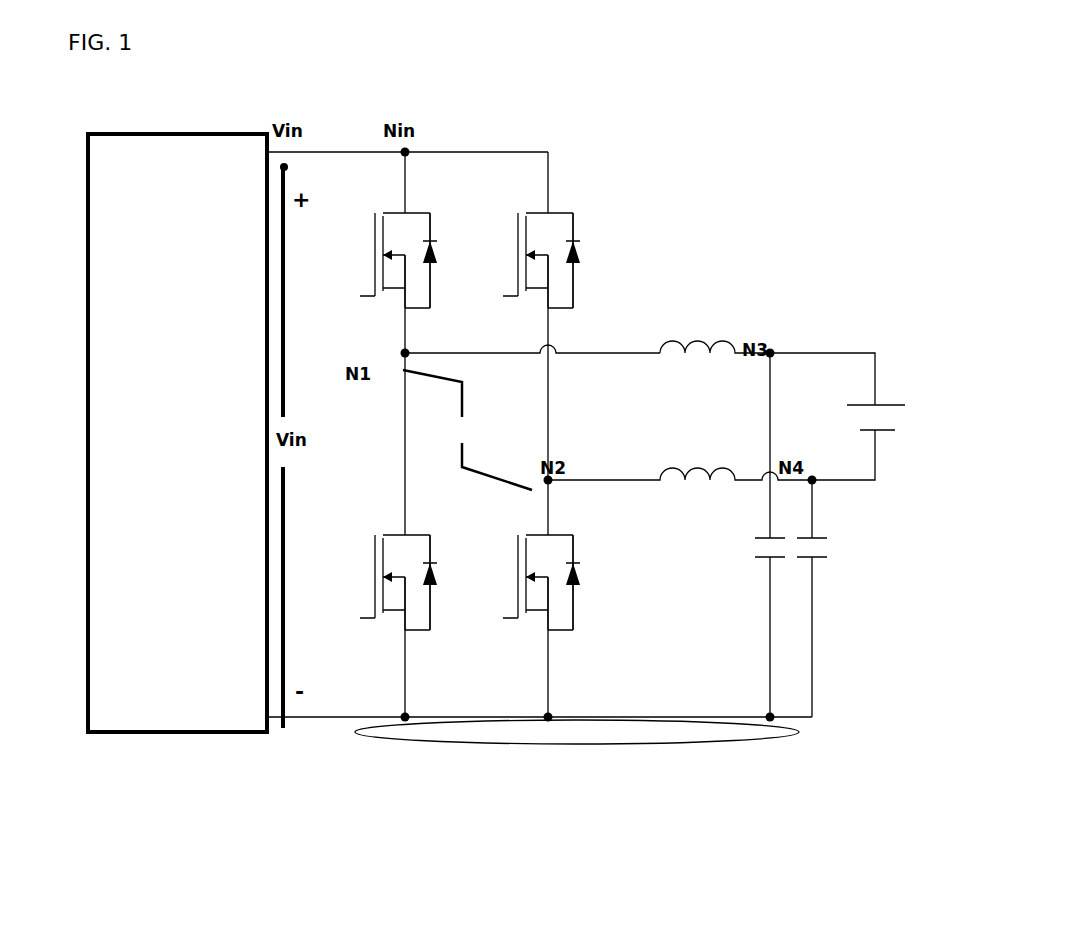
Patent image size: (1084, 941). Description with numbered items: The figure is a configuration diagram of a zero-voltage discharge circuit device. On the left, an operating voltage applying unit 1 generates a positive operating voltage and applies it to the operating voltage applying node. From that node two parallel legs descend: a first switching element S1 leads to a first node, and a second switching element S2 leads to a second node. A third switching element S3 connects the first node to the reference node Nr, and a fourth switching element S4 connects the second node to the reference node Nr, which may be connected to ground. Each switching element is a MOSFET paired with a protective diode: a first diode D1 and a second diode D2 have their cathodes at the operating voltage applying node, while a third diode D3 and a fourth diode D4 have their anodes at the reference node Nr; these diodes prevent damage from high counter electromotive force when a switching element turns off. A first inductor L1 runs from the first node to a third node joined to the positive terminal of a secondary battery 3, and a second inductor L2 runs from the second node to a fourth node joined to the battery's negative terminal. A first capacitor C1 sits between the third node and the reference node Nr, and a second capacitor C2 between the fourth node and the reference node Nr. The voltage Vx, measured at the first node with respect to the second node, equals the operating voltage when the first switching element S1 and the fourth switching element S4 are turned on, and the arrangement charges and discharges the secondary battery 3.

The operating voltage applying unit 1 is at (158, 735).
The secondary battery 3 is at (878, 405).
The first switching element S1 is at (386, 260).
The second switching element S2 is at (529, 260).
The third switching element S3 is at (386, 582).
The fourth switching element S4 is at (529, 582).
The first diode D1 is at (444, 260).
The second diode D2 is at (587, 260).
The third diode D3 is at (444, 582).
The fourth diode D4 is at (587, 582).
The first inductor L1 is at (715, 334).
The second inductor L2 is at (680, 462).
The first capacitor C1 is at (745, 535).
The second capacitor C2 is at (823, 598).
The voltage Vx is at (467, 430).
The reference node Nr is at (577, 752).